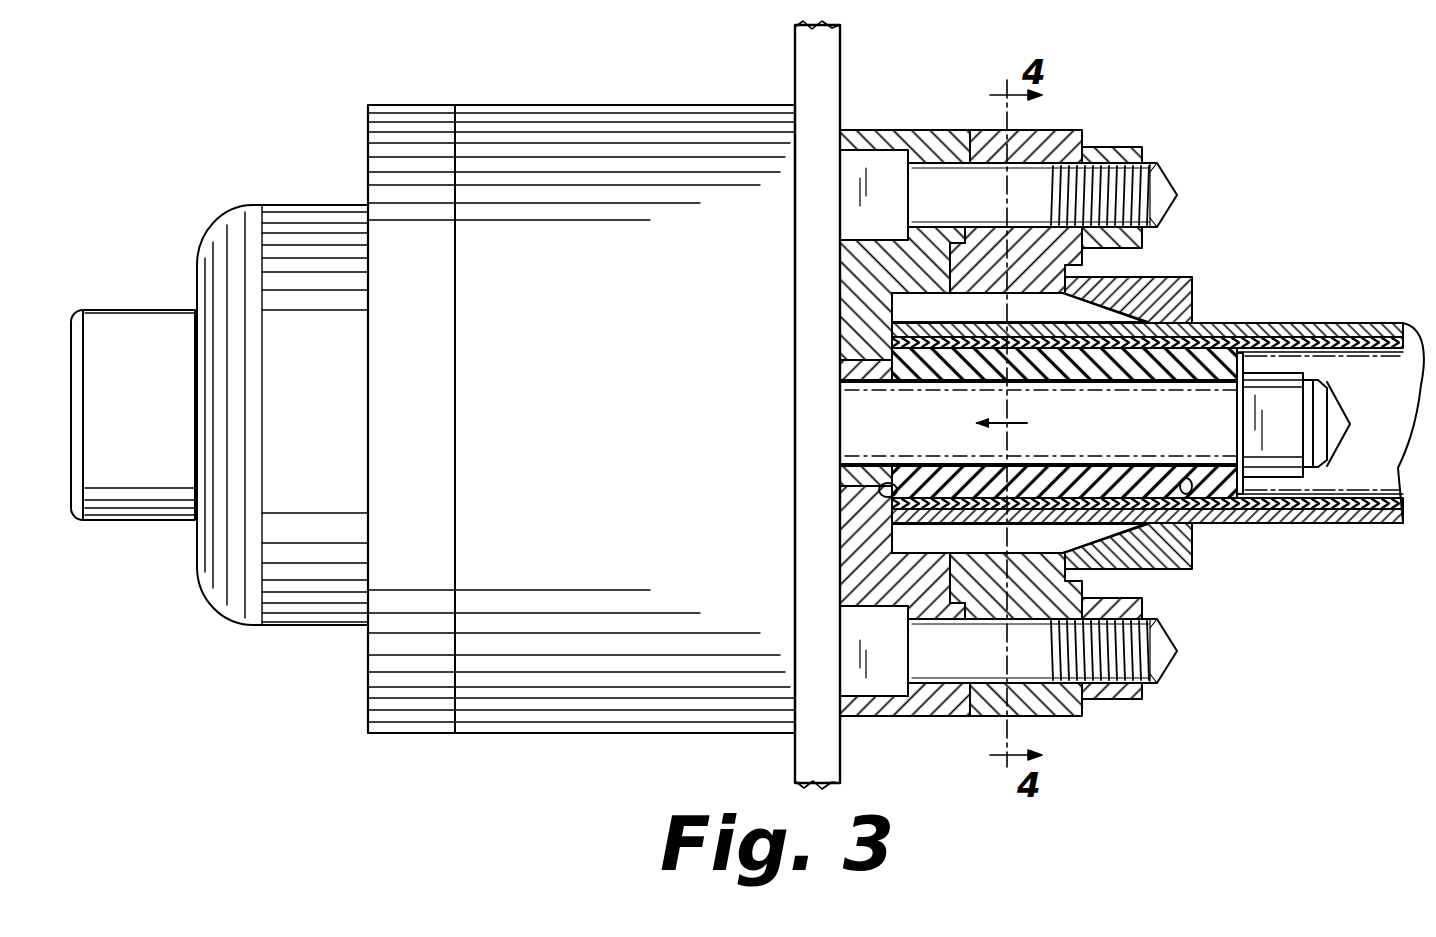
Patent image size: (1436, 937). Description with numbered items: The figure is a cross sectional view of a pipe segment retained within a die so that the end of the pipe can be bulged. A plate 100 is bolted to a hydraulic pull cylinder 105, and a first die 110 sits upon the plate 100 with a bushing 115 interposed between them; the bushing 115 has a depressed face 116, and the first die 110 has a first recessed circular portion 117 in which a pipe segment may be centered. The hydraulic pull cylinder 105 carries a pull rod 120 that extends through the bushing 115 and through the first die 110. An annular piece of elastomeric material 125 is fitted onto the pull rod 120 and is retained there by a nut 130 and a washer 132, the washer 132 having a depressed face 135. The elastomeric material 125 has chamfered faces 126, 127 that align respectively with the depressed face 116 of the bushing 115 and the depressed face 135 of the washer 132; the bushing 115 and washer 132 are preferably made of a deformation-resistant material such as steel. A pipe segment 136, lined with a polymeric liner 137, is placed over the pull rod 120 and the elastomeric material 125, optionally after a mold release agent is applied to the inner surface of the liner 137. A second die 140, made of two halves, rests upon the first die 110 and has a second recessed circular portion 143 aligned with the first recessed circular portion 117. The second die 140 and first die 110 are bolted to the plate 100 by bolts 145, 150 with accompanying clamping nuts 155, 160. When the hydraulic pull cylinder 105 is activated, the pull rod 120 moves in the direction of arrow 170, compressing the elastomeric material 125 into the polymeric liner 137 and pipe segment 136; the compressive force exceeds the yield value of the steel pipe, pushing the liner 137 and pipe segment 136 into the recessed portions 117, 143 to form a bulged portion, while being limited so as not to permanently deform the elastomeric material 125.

The plate 100 is at (802, 72).
The hydraulic pull cylinder 105 is at (540, 125).
The first die 110 is at (945, 145).
The bushing 115 is at (847, 478).
The depressed face 116 is at (890, 518).
The first recessed circular portion 117 is at (900, 310).
The pull rod 120 is at (976, 414).
The annular piece of elastomeric material 125 is at (1046, 363).
The chamfered face 126 is at (888, 497).
The chamfered face 127 is at (1178, 487).
The nut 130 is at (1283, 374).
The washer 132 is at (1236, 352).
The depressed face 135 is at (1218, 300).
The pipe segment 136 is at (1347, 513).
The polymeric liner 137 is at (1297, 510).
The second die 140 is at (1045, 137).
The second recessed circular portion 143 is at (1078, 313).
The bolt 145 is at (1160, 188).
The bolt 150 is at (1163, 672).
The clamping nut 155 is at (1115, 150).
The clamping nut 160 is at (1117, 692).
The arrow 170 is at (983, 435).